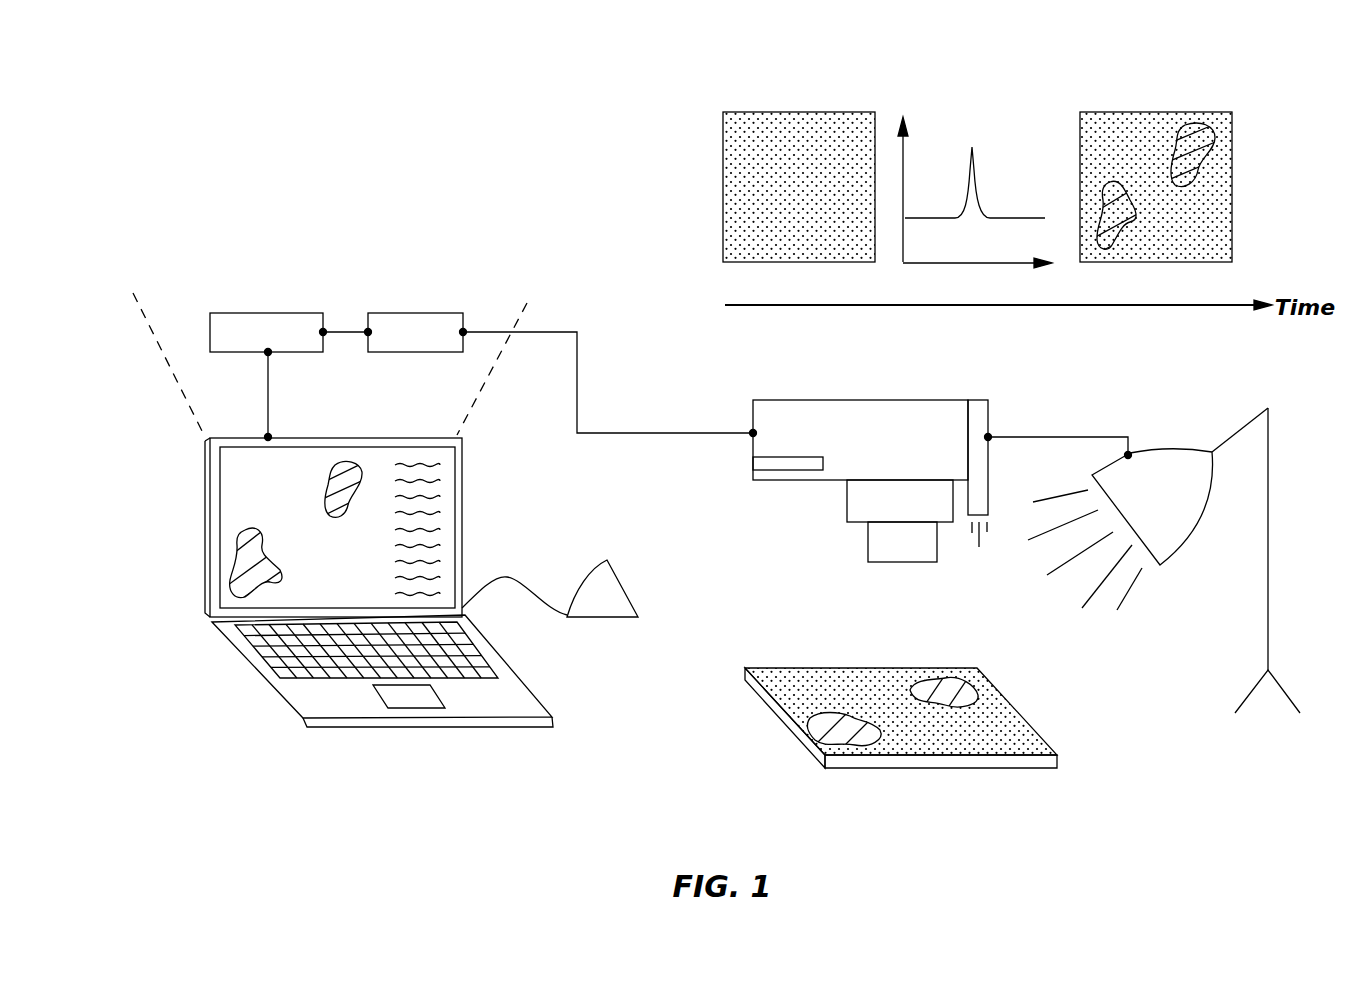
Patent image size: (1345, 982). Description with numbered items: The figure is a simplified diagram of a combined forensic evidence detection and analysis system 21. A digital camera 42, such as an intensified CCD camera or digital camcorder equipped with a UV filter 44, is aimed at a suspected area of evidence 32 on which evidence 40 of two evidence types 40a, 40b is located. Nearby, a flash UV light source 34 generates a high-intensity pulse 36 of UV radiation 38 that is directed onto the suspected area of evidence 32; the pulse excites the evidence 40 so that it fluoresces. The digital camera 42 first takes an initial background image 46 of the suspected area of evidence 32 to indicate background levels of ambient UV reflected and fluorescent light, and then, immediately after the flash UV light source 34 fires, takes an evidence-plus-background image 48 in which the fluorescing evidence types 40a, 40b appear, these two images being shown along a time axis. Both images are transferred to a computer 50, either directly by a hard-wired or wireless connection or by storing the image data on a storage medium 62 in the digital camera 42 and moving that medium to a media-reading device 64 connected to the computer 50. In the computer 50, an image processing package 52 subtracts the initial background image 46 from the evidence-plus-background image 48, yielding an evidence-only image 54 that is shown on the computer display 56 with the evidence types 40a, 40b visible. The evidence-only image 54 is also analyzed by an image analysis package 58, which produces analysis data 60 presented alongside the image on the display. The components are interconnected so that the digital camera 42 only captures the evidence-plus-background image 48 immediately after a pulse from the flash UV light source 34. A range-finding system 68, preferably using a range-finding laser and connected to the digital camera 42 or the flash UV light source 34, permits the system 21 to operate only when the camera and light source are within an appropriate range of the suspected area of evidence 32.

The combined forensic evidence detection and analysis system 21 is at (566, 172).
The suspected area of evidence 32 is at (938, 760).
The flash UV light source 34 is at (1148, 510).
The high-intensity pulse 36 is at (973, 165).
The UV radiation 38 is at (1097, 593).
The evidence 40 is at (873, 635).
The evidence type 40a is at (833, 725).
The evidence type 40b is at (960, 697).
The digital camera 42 is at (859, 448).
The UV filter 44 is at (889, 551).
The initial background image 46 is at (840, 112).
The evidence-plus-background image 48 is at (1185, 112).
The computer 50 is at (220, 637).
The image processing package 52 is at (402, 345).
The evidence-only image 54 is at (273, 495).
The computer display 56 is at (202, 517).
The image analysis package 58 is at (254, 345).
The analysis data 60 is at (440, 500).
The storage medium 62 is at (753, 465).
The media-reading device 64 is at (585, 603).
The range-finding system 68 is at (988, 413).